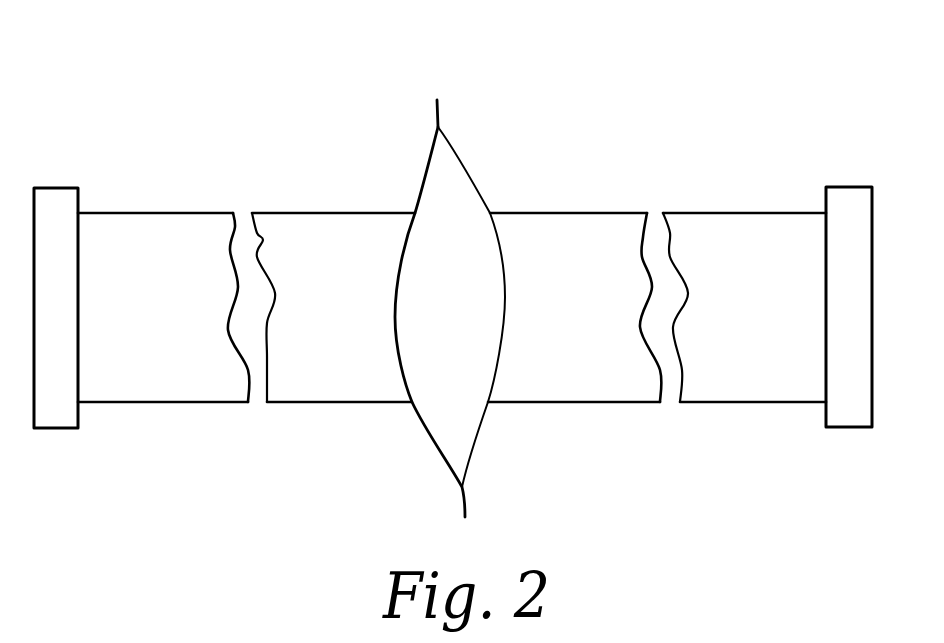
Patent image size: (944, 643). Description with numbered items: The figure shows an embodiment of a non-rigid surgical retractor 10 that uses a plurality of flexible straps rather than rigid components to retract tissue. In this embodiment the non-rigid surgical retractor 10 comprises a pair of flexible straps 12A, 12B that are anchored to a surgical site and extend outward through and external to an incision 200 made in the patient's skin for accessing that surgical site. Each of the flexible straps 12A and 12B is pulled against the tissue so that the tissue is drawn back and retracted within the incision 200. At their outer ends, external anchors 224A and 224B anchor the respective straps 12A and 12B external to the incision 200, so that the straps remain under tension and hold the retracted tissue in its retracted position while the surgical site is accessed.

The non-rigid surgical retractor 10 is at (187, 100).
The flexible strap 12A is at (325, 355).
The flexible strap 12B is at (567, 355).
The incision 200 is at (457, 187).
The external anchor 224A is at (52, 413).
The external anchor 224B is at (848, 415).